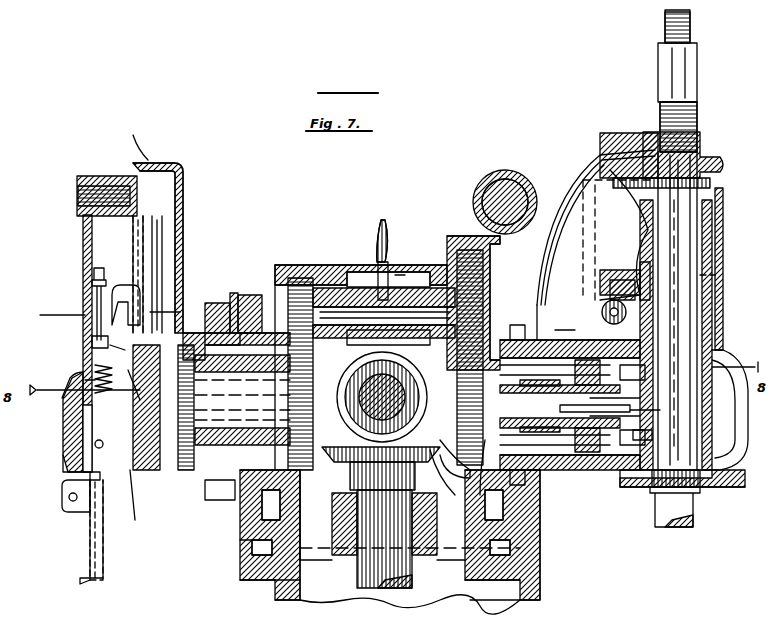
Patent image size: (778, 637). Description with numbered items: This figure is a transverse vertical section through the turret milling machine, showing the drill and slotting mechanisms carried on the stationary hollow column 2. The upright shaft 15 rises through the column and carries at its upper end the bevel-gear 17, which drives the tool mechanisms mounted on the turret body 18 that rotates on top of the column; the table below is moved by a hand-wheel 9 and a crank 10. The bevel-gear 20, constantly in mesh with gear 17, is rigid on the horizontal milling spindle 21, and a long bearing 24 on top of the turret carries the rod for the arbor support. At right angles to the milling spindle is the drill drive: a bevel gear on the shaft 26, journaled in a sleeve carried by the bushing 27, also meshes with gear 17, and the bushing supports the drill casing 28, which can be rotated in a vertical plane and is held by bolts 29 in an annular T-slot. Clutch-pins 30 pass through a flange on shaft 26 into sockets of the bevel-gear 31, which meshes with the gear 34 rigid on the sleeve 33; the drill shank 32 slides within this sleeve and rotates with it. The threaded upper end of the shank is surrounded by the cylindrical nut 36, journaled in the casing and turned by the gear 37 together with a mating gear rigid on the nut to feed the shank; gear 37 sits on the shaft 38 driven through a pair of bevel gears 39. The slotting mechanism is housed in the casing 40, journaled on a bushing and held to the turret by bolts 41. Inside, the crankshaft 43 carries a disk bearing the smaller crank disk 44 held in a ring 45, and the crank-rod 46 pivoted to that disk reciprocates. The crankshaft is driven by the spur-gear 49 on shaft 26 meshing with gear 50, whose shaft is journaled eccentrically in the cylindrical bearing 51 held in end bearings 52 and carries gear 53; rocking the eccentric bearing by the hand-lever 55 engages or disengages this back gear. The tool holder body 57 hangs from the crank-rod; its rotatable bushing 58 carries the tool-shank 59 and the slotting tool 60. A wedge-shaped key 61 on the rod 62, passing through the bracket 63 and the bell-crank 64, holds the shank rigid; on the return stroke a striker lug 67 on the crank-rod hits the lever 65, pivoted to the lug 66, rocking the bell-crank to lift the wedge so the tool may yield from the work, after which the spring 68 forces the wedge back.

The stationary hollow column 2 is at (480, 608).
The hand-wheel 9 is at (137, 319).
The crank 10 is at (107, 309).
The upright shaft 15 is at (360, 572).
The bevel-gear 17 is at (380, 462).
The turret body 18 is at (310, 275).
The bevel-gear 20 is at (380, 396).
The milling spindle 21 is at (378, 385).
The bearing 24 is at (495, 175).
The drill driving shaft 26 is at (457, 467).
The bushing 27 is at (570, 430).
The drill casing 28 is at (580, 176).
The bolts 29 is at (575, 470).
The clutch-pins 30 is at (628, 355).
The bevel-gear 31 is at (665, 410).
The drill shank 32 is at (702, 503).
The sleeve 33 is at (715, 435).
The gear 34 is at (728, 362).
The cylindrical nut 36 is at (658, 90).
The gear 37 is at (610, 315).
The shaft 38 is at (612, 150).
The bevel-gear 39 is at (606, 290).
The casing 40 is at (184, 203).
The bolts 41 is at (205, 490).
The crankshaft 43 is at (230, 440).
The crank disk 44 is at (182, 440).
The ring 45 is at (150, 440).
The crank-rod 46 is at (155, 258).
The spur-gear 49 is at (459, 459).
The spur-gear 50 is at (467, 250).
The eccentric bearing 51 is at (400, 300).
The end bearings 52 is at (440, 338).
The spur-gear 53 is at (322, 268).
The hand-lever 55 is at (384, 253).
The tool holder body 57 is at (76, 373).
The bushing 58 is at (63, 460).
The tool-shank 59 is at (80, 510).
The slotting tool 60 is at (104, 551).
The wedge-shaped key 61 is at (72, 400).
The rod 62 is at (92, 342).
The bracket 63 is at (85, 380).
The bell-crank 64 is at (117, 290).
The lever 65 is at (140, 320).
The lug 66 is at (116, 338).
The striker lug 67 is at (126, 371).
The spring 68 is at (95, 388).